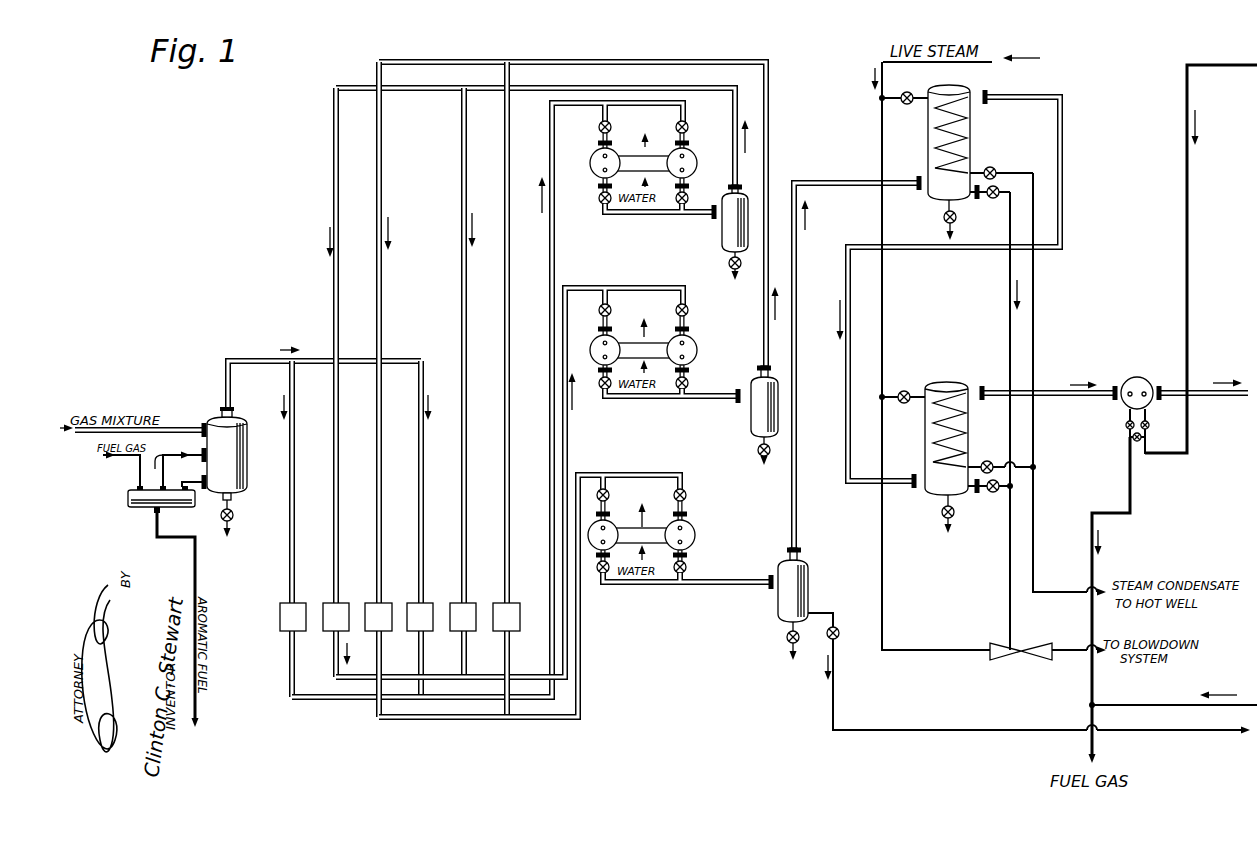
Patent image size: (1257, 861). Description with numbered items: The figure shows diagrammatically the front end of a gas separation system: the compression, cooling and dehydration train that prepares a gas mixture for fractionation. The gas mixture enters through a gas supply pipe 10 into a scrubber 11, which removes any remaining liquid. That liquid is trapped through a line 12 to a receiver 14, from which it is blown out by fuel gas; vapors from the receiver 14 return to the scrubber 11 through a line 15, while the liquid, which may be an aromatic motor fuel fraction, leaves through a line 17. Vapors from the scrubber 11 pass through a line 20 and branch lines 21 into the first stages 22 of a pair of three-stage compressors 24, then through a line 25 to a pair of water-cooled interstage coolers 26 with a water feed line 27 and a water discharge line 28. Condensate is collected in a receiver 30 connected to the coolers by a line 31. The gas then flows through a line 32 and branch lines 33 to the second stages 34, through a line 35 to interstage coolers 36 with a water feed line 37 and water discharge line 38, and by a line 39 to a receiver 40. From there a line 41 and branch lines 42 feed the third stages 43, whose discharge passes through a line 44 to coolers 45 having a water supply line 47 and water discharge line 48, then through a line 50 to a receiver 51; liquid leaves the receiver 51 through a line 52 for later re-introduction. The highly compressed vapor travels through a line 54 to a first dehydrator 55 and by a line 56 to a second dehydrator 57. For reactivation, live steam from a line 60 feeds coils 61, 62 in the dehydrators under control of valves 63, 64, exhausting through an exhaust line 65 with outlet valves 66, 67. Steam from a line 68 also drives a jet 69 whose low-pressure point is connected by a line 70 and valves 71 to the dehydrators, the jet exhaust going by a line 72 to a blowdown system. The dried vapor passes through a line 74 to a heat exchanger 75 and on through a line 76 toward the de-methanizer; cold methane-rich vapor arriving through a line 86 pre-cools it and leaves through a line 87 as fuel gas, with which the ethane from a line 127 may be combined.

The gas supply pipe 10 is at (183, 426).
The scrubber 11 is at (238, 465).
The line 12 is at (196, 474).
The receiver 14 is at (127, 498).
The line 15 is at (180, 462).
The line 17 is at (198, 566).
The line 20 is at (251, 358).
The branch lines 21 is at (289, 512).
The first stages 22 is at (279, 618).
The three-stage compressors 24 is at (325, 586).
The line 25 is at (556, 250).
The interstage coolers 26 is at (640, 162).
The water feed line 27 is at (643, 183).
The water discharge line 28 is at (658, 141).
The receiver 30 is at (717, 238).
The line 31 is at (637, 216).
The line 32 is at (741, 108).
The branch lines 33 is at (333, 189).
The second stages 34 is at (341, 602).
The line 35 is at (568, 345).
The interstage coolers 36 is at (649, 346).
The water feed line 37 is at (642, 368).
The water discharge line 38 is at (656, 324).
The line 39 is at (664, 401).
The receiver 40 is at (749, 423).
The line 41 is at (770, 130).
The branch lines 42 is at (383, 157).
The third stages 43 is at (384, 602).
The line 44 is at (581, 697).
The coolers 45 is at (652, 531).
The water supply line 47 is at (640, 557).
The water discharge line 48 is at (647, 512).
The line 50 is at (691, 585).
The receiver 51 is at (777, 610).
The line 52 is at (831, 702).
The line 54 is at (790, 498).
The first dehydrator 55 is at (970, 131).
The line 56 is at (1062, 219).
The second dehydrator 57 is at (958, 380).
The line 60 is at (879, 98).
The coil 61 is at (952, 162).
The coil 62 is at (938, 445).
The valve 63 is at (907, 93).
The valve 64 is at (905, 391).
The exhaust line 65 is at (1037, 494).
The valve 66 is at (995, 169).
The valve 67 is at (990, 461).
The line 68 is at (884, 618).
The jet 69 is at (1027, 643).
The line 70 is at (1008, 549).
The valves 71 is at (991, 199).
The line 72 is at (1065, 645).
The line 74 is at (1051, 394).
The heat exchanger 75 is at (1137, 377).
The line 76 is at (1200, 384).
The line 86 is at (1210, 63).
The line 87 is at (1134, 496).
The line 127 is at (1170, 699).